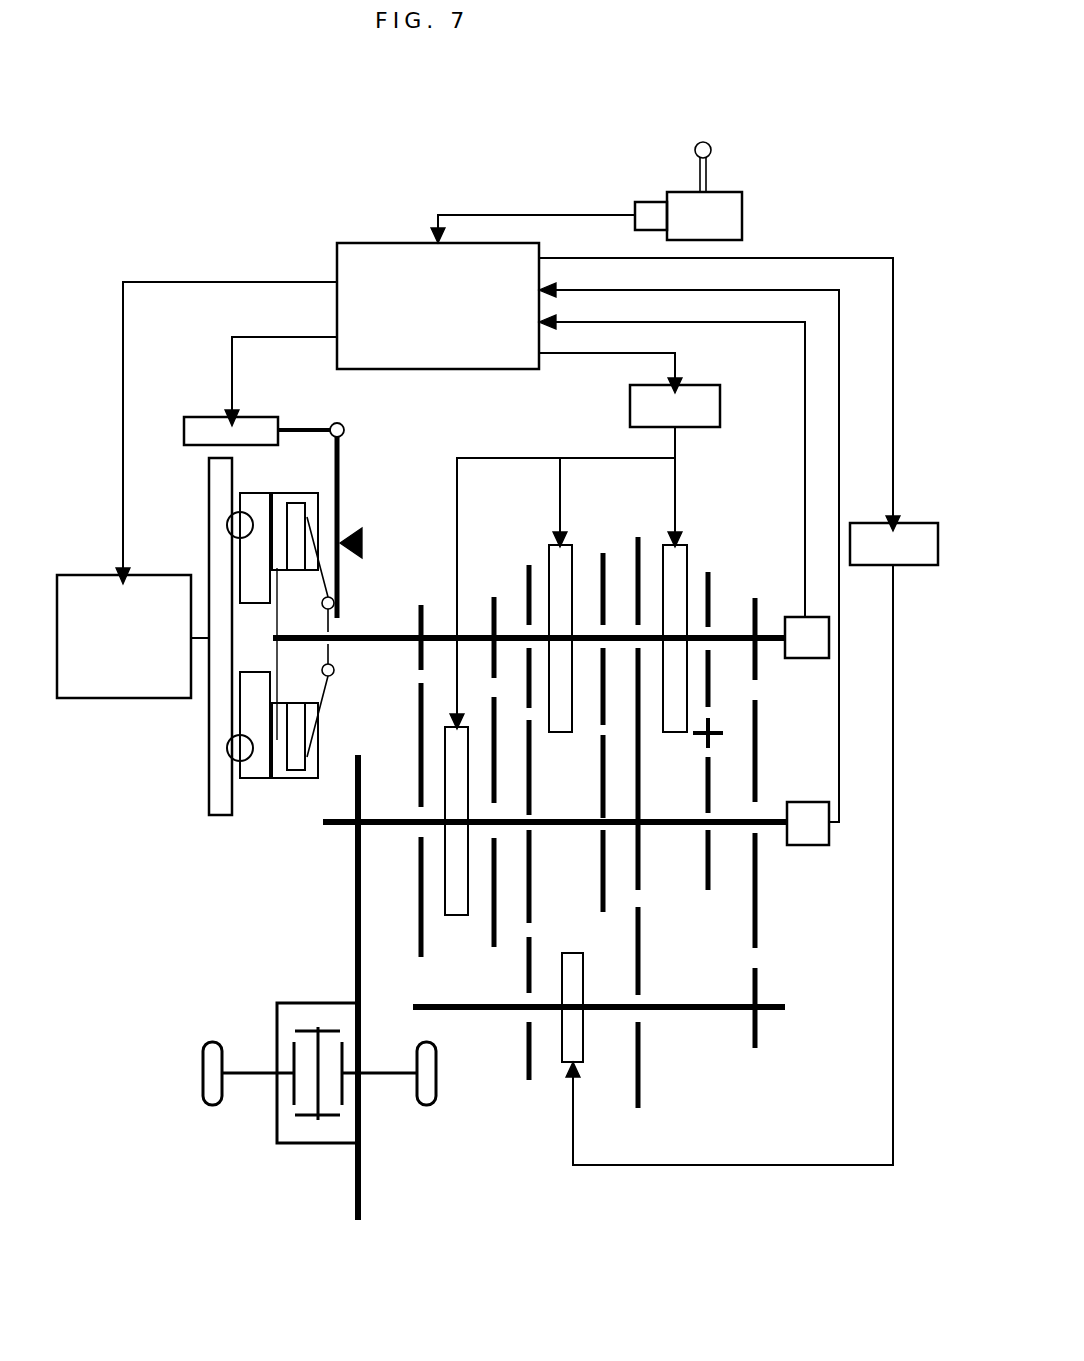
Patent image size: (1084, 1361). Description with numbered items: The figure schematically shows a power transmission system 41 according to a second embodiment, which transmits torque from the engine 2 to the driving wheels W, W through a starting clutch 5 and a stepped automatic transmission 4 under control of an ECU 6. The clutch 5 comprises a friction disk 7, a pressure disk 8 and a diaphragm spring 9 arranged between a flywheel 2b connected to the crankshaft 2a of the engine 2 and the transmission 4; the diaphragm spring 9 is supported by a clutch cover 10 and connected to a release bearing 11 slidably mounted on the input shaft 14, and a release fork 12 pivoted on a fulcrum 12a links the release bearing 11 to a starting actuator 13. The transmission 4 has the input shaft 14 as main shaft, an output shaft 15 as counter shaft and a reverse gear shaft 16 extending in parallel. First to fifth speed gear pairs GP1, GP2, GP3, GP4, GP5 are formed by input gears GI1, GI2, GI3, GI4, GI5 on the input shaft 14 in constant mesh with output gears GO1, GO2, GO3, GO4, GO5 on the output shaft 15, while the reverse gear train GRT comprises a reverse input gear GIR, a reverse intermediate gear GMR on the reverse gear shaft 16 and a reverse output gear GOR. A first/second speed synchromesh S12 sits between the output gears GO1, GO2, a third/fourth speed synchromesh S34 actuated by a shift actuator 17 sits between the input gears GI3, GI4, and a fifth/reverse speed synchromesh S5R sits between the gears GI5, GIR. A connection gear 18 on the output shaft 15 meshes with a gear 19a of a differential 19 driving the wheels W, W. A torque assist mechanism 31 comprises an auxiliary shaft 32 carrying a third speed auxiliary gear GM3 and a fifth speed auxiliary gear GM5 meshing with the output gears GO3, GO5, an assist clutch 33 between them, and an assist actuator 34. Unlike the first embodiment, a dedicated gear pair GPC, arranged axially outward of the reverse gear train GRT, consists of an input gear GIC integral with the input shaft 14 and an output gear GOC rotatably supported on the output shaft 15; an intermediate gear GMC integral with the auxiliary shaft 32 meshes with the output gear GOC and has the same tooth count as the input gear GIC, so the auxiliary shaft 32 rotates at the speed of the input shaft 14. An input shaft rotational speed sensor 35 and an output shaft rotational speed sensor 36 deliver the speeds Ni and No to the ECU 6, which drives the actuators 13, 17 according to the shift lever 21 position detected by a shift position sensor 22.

The power transmission system 41 is at (203, 210).
The ECU 6 is at (365, 243).
The shift position sensor 22 is at (650, 202).
The shift lever 21 is at (708, 170).
The shift actuator 17 is at (690, 385).
The starting actuator 13 is at (205, 417).
The release fork 12 is at (345, 432).
The fulcrum 12a is at (360, 538).
The clutch cover 10 is at (284, 493).
The engine 2 is at (100, 575).
The crankshaft 2a is at (199, 650).
The flywheel 2b is at (215, 477).
The pressure disk 8 is at (290, 540).
The friction disk 7 is at (280, 762).
The diaphragm spring 9 is at (320, 745).
The release bearing 11 is at (334, 676).
The starting clutch 5 is at (266, 668).
The input shaft 14 is at (725, 636).
The output shaft 15 is at (720, 827).
The reverse gear shaft 16 is at (724, 736).
The connection gear 18 is at (355, 875).
The differential 19 is at (290, 1143).
The gear of differential 19a is at (355, 930).
The auxiliary shaft 32 is at (775, 1010).
The assist clutch 33 is at (585, 1050).
The torque assist mechanism 31 is at (675, 1108).
The transmission 4 is at (820, 1090).
The assist actuator 34 is at (918, 523).
The input shaft rotational speed sensor 35 is at (810, 658).
The output shaft rotational speed sensor 36 is at (805, 845).
The output shaft rotational speed No is at (585, 281).
The input shaft rotational speed Ni is at (581, 313).
The driving wheels W is at (208, 1107).
The first speed input gear GI1 is at (421, 605).
The second speed input gear GI2 is at (494, 597).
The third speed input gear GI3 is at (529, 565).
The fourth speed input gear GI4 is at (603, 553).
The fifth speed input gear GI5 is at (638, 537).
The reverse input gear GIR is at (710, 572).
The input gear GIC is at (757, 598).
The first speed output gear GO1 is at (421, 855).
The second speed output gear GO2 is at (532, 800).
The third speed output gear GO3 is at (532, 845).
The fourth speed output gear GO4 is at (606, 742).
The fifth speed output gear GO5 is at (641, 790).
The reverse output gear GOR is at (710, 795).
The output gear GOC is at (758, 910).
The first speed gear pair GP1 is at (405, 920).
The second speed gear pair GP2 is at (505, 945).
The third speed gear pair GP3 is at (548, 888).
The fourth speed gear pair GP4 is at (605, 928).
The fifth speed gear pair GP5 is at (646, 905).
The gear pair GPC is at (772, 780).
The reverse gear train GRT is at (709, 912).
The reverse intermediate gear GMR is at (710, 716).
The intermediate gear GMC is at (758, 985).
The third speed auxiliary gear GM3 is at (532, 1065).
The fifth speed auxiliary gear GM5 is at (641, 1075).
The first/second speed synchromesh S12 is at (457, 916).
The third/fourth speed synchromesh S34 is at (561, 732).
The fifth/reverse speed synchromesh S5R is at (688, 560).